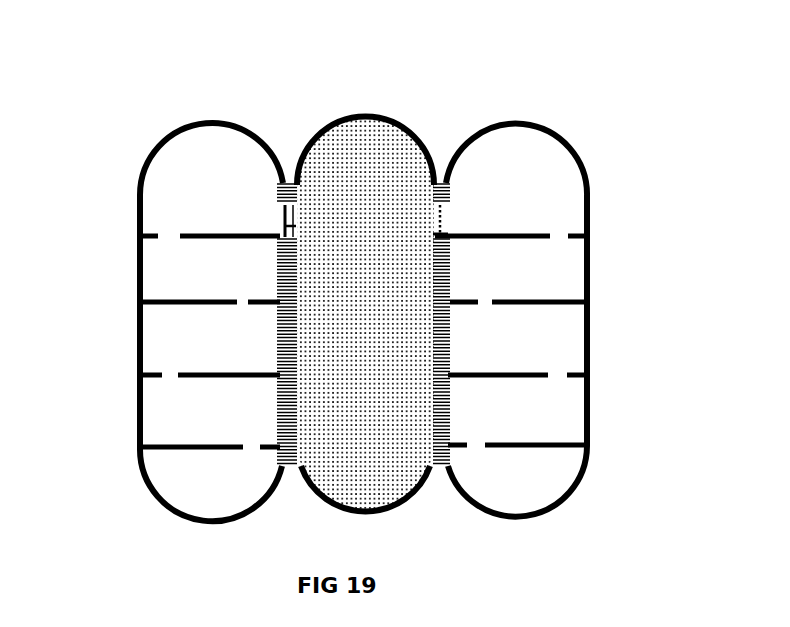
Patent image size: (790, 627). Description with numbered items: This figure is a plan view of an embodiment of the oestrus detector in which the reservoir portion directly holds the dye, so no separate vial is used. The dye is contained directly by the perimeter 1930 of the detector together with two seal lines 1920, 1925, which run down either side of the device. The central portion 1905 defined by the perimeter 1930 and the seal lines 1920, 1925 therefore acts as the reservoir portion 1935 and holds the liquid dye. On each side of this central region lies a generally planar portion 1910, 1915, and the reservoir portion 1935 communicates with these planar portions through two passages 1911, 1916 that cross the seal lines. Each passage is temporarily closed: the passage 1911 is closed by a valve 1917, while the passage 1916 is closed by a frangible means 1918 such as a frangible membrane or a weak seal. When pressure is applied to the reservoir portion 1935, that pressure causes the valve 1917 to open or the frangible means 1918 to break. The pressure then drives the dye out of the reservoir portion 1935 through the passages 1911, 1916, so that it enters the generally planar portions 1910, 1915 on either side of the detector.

The central portion 1905 is at (359, 286).
The generally planar portion 1910 is at (163, 295).
The passage 1911 is at (276, 211).
The generally planar portion 1915 is at (558, 165).
The passage 1916 is at (453, 210).
The valve 1917 is at (282, 226).
The frangible means 1918 is at (440, 226).
The seal line 1920 is at (282, 345).
The seal line 1925 is at (450, 338).
The perimeter 1930 is at (323, 128).
The reservoir portion 1935 is at (378, 235).